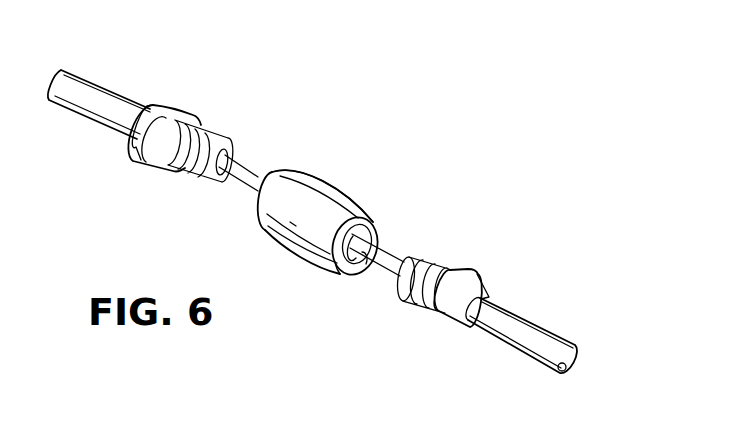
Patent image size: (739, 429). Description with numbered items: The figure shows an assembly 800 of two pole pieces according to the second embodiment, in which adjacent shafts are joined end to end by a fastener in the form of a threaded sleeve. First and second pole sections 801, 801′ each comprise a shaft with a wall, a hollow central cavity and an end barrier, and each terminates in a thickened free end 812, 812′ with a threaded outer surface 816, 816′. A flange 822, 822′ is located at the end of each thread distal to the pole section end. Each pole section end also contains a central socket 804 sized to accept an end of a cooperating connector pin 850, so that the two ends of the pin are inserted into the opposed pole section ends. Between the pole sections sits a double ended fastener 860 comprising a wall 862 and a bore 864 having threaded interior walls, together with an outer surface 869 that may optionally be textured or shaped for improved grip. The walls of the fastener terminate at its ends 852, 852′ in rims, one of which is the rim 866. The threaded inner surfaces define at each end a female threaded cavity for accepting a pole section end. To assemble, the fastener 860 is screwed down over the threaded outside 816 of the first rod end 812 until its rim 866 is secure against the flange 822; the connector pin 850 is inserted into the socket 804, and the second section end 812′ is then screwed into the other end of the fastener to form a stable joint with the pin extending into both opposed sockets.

The connector assembly 800 is at (121, 50).
The first pole section 801 is at (105, 115).
The flange 822 is at (138, 147).
The free end 812 is at (181, 172).
The threaded outer surface 816 is at (206, 145).
The central socket 804 is at (238, 160).
The double ended fastener 860 is at (320, 173).
The outer surface 869 is at (288, 186).
The wall 862 is at (375, 218).
The end of fastener 852 is at (250, 203).
The end of fastener 852′ is at (333, 278).
The rim 866 is at (355, 281).
The bore 864 is at (363, 285).
The second pin 850 is at (393, 253).
The threaded outer surface 816′ is at (413, 306).
The second section end 812′ is at (446, 262).
The flange 822′ is at (483, 272).
The second pole section 801′ is at (542, 320).